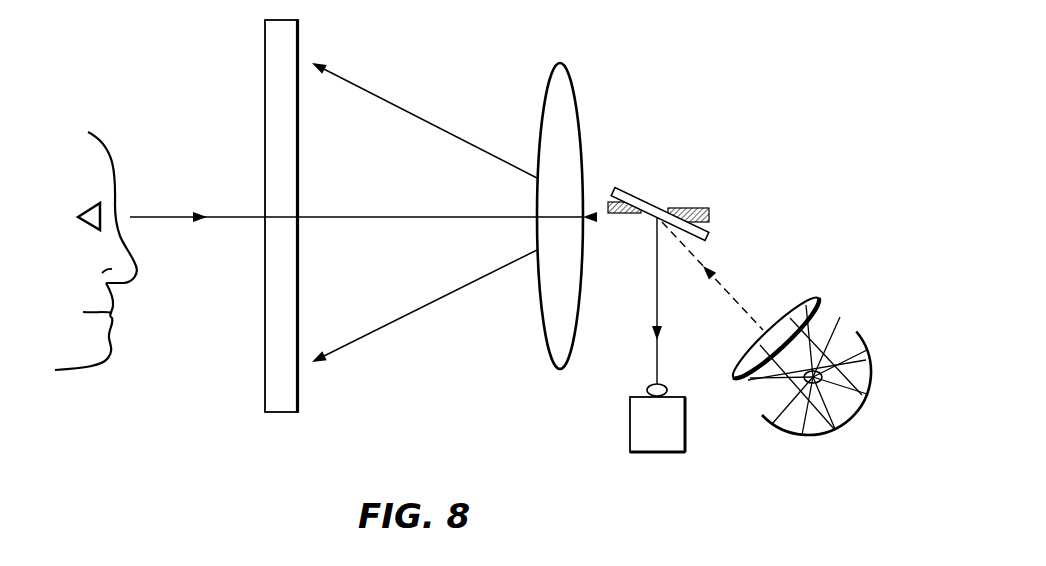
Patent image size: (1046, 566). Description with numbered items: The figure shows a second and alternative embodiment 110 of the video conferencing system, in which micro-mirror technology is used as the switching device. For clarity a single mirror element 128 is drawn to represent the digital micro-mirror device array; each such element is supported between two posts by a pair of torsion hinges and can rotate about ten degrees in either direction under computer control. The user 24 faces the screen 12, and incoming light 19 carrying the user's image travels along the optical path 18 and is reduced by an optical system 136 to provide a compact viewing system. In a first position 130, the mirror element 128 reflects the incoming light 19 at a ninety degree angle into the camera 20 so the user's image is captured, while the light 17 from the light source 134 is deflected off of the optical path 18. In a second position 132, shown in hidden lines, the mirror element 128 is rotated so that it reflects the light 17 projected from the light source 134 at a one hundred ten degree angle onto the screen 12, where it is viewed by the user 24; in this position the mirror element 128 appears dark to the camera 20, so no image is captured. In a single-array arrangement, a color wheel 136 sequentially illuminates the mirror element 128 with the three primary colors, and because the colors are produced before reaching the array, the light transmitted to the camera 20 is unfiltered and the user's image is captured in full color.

The screen 12 is at (297, 47).
The user 24 is at (107, 145).
The incoming light 19 is at (203, 219).
The optical path 18 is at (362, 217).
The optical system 136 is at (543, 107).
The first position 130 is at (630, 192).
The second position 132 is at (695, 208).
The mirror element 128 is at (725, 226).
The light 17 is at (727, 287).
The camera 20 is at (630, 418).
The light source 134 is at (855, 405).
The alternative embodiment 110 is at (753, 85).